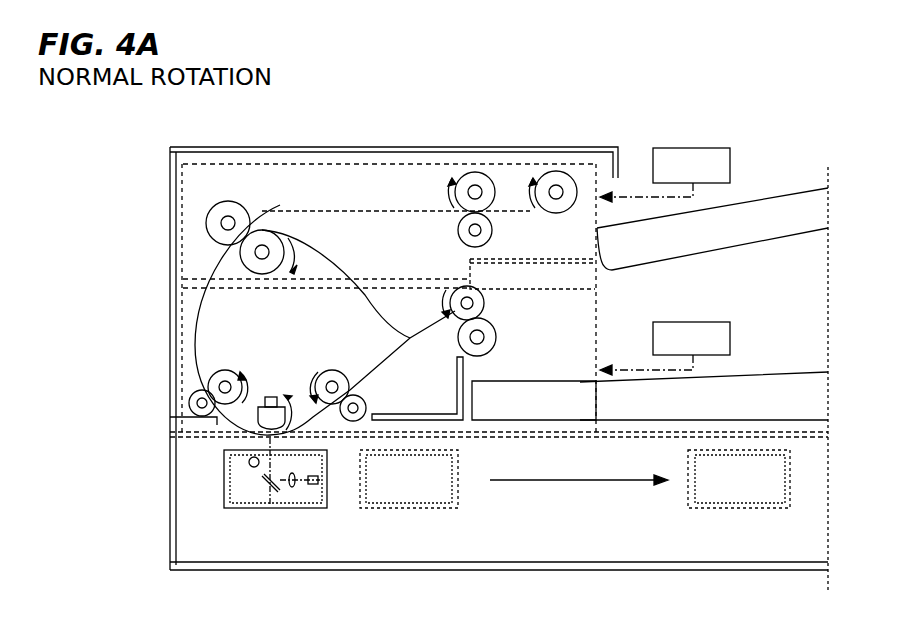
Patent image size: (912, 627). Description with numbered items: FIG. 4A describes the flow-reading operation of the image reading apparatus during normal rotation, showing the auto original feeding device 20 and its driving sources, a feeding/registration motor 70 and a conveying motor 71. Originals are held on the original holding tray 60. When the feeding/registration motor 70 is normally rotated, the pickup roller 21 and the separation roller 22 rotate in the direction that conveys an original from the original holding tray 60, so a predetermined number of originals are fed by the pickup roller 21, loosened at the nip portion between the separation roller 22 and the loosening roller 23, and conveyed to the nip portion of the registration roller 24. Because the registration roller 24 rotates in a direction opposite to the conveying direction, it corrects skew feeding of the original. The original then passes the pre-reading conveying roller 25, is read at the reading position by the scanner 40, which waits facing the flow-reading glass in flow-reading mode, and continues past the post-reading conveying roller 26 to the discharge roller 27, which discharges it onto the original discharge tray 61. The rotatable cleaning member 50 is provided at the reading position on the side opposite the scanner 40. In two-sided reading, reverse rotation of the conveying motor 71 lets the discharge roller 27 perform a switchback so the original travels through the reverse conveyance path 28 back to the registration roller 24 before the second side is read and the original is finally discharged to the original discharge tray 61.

The auto original feeding device 20 is at (363, 142).
The pickup roller 21 is at (549, 171).
The separation roller 22 is at (474, 170).
The loosening roller 23 is at (460, 246).
The registration roller 24 is at (283, 238).
The pre-reading conveying roller 25 is at (218, 375).
The post-reading conveying roller 26 is at (325, 368).
The discharge roller 27 is at (492, 340).
The reverse conveyance path 28 is at (338, 258).
The scanner 40 is at (257, 510).
The cleaning member 50 is at (275, 397).
The original holding tray 60 is at (805, 188).
The original discharge tray 61 is at (808, 373).
The feeding/registration motor 70 is at (705, 148).
The conveying motor 71 is at (710, 322).